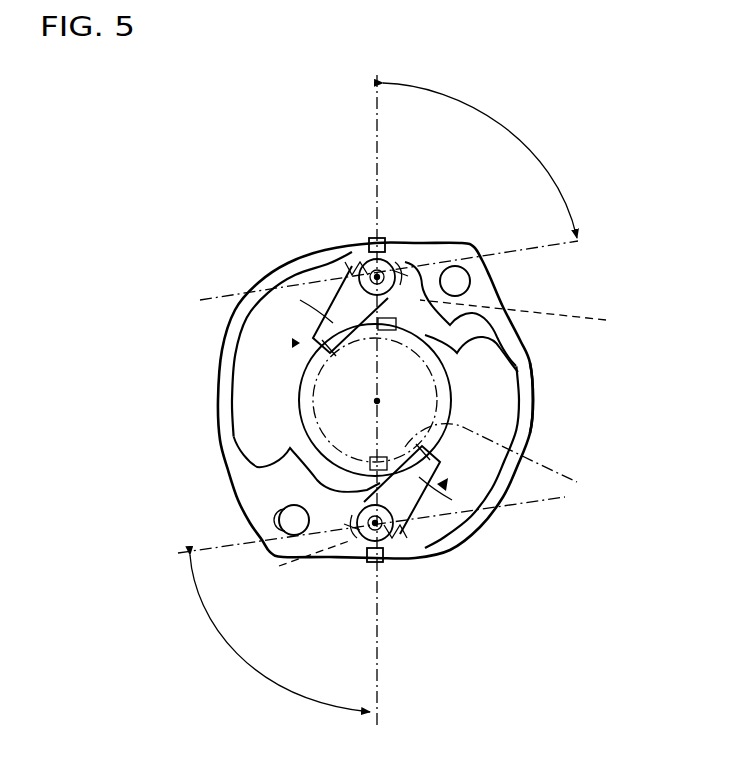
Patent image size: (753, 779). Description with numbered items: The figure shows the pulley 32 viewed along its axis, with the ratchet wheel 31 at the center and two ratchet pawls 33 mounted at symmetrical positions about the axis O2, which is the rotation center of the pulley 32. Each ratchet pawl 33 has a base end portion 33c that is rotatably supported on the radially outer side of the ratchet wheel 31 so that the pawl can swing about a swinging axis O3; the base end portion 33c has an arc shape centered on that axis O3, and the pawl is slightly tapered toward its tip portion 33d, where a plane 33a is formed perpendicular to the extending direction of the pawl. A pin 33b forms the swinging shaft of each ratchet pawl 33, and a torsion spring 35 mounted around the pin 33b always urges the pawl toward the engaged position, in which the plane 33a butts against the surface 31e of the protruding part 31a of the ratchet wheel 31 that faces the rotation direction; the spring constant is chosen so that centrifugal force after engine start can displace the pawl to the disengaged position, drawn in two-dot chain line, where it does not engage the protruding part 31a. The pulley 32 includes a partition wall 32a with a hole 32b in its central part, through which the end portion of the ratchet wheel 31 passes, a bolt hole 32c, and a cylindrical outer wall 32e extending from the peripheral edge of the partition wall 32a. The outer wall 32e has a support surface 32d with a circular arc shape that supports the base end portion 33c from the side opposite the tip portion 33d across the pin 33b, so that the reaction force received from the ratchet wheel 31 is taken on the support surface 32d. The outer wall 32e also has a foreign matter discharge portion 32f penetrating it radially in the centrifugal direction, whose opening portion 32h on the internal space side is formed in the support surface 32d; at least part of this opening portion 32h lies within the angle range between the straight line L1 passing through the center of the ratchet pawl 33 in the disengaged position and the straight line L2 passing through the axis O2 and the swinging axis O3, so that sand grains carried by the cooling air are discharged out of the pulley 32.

The ratchet wheel 31 is at (375, 400).
The protruding part 31a is at (548, 478).
The surface of the protruding part 31e is at (332, 306).
The pulley 32 is at (470, 234).
The partition wall 32a is at (497, 378).
The hole 32b is at (313, 437).
The bolt hole 32c is at (455, 281).
The support surface 32d is at (372, 259).
The outer wall 32e is at (534, 400).
The foreign matter discharge portion 32f is at (372, 238).
The opening portion 32h is at (405, 258).
The ratchet pawl 33 is at (300, 314).
The plane 33a is at (298, 343).
The pin 33b is at (442, 446).
The base end portion 33c is at (400, 262).
The tip portion 33d is at (318, 342).
The torsion spring 35 is at (343, 266).
The axis O2 is at (375, 400).
The axis O3 is at (375, 274).
The straight line L1 is at (548, 243).
The straight line L2 is at (372, 92).